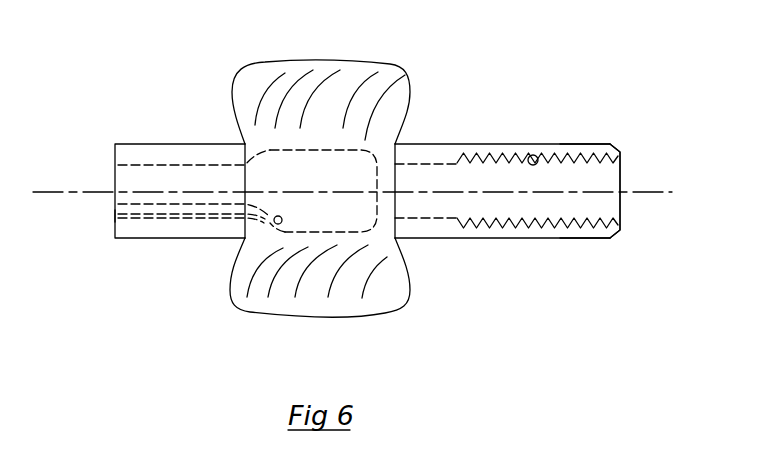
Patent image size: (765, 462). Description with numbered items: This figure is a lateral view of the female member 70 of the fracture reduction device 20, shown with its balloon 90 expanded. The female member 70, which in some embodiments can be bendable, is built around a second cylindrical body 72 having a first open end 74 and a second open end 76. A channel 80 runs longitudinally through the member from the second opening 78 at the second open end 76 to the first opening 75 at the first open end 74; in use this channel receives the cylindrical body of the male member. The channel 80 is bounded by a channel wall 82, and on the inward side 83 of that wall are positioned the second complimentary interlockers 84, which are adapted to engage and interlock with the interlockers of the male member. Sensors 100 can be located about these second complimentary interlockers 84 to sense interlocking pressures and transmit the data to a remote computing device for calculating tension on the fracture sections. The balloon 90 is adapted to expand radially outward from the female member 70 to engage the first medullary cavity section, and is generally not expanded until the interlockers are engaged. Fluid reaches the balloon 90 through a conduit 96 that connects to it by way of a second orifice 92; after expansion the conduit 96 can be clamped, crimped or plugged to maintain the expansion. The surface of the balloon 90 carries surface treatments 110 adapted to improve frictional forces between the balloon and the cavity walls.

The fracture reduction device 20 is at (374, 96).
The female member 70 is at (507, 262).
The second cylindrical body 72 is at (164, 148).
The first open end 74 is at (668, 192).
The first opening 75 is at (643, 191).
The second open end 76 is at (155, 228).
The second opening 78 is at (156, 160).
The channel 80 is at (450, 242).
The channel wall 82 is at (527, 127).
The inward side 83 is at (506, 261).
The second complimentary interlockers 84 is at (547, 258).
The balloon 90 is at (335, 253).
The second orifice 92 is at (243, 250).
The conduit 96 is at (187, 248).
The sensors 100 is at (564, 127).
The surface treatments 110 is at (313, 82).